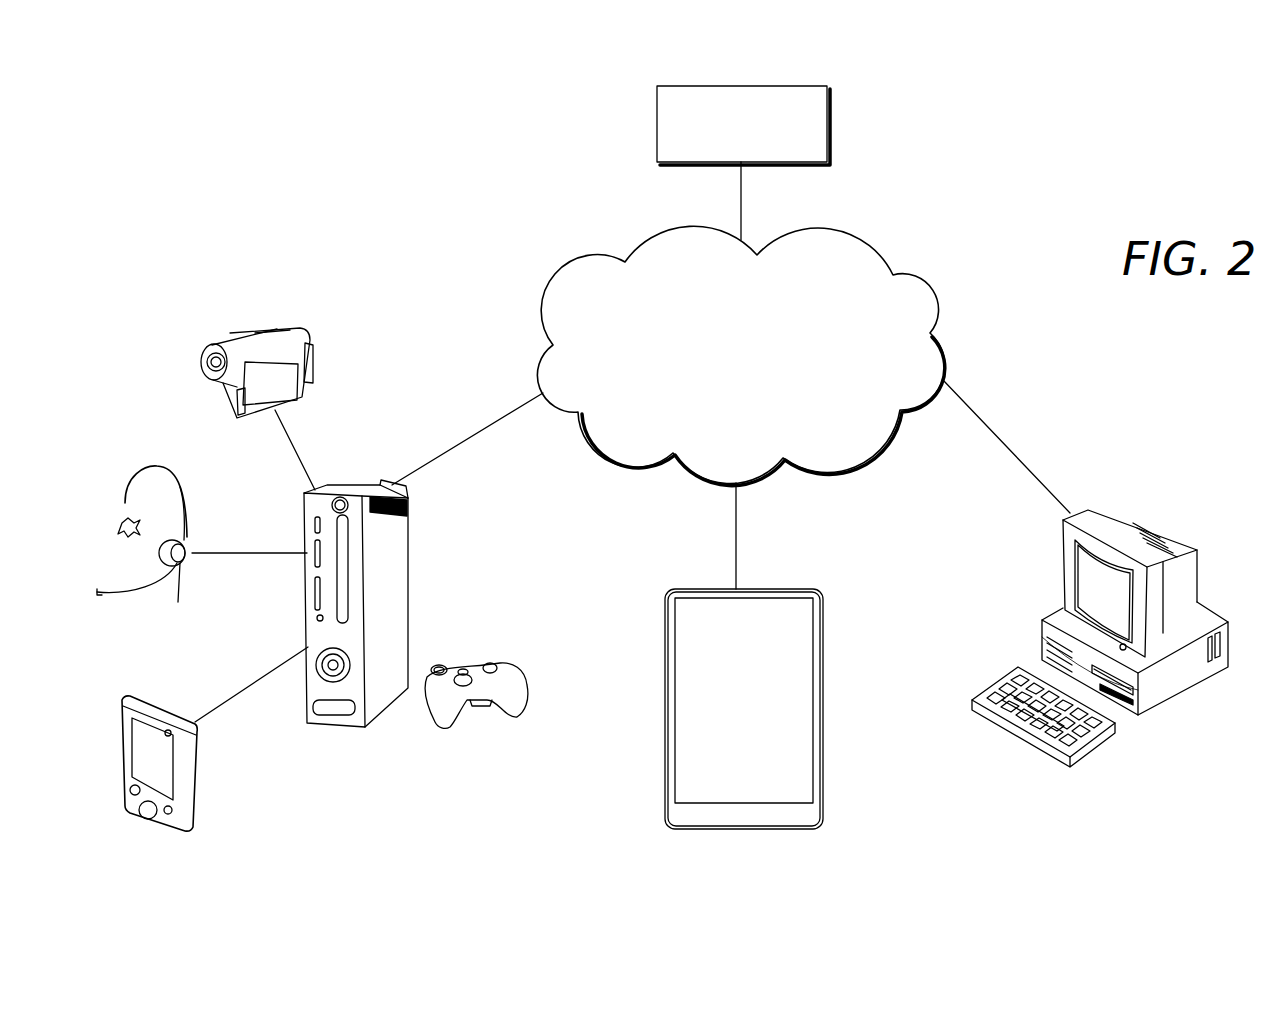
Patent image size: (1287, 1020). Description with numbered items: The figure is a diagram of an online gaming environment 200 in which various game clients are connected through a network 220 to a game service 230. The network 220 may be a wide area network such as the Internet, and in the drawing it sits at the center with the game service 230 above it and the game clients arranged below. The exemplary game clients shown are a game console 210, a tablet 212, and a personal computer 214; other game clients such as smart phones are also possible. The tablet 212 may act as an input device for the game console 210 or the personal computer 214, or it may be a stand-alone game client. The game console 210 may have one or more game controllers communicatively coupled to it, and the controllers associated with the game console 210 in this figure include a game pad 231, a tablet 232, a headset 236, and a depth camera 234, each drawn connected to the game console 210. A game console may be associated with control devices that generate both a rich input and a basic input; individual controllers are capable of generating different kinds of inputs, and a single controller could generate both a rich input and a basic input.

The online gaming environment 200 is at (1007, 194).
The game console 210 is at (408, 538).
The tablet 212 is at (824, 697).
The personal computer 214 is at (1163, 525).
The network 220 is at (823, 236).
The game service 230 is at (784, 86).
The game pad 231 is at (480, 662).
The tablet 232 is at (198, 812).
The depth camera 234 is at (287, 322).
The headset 236 is at (175, 466).